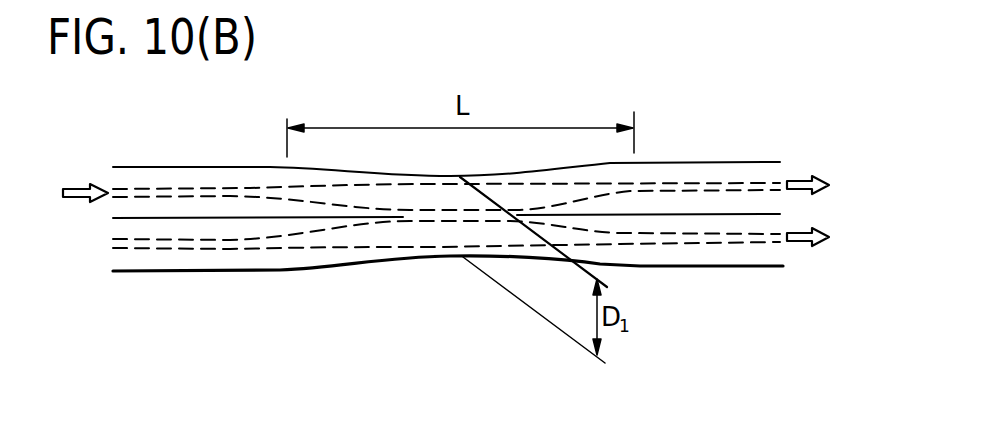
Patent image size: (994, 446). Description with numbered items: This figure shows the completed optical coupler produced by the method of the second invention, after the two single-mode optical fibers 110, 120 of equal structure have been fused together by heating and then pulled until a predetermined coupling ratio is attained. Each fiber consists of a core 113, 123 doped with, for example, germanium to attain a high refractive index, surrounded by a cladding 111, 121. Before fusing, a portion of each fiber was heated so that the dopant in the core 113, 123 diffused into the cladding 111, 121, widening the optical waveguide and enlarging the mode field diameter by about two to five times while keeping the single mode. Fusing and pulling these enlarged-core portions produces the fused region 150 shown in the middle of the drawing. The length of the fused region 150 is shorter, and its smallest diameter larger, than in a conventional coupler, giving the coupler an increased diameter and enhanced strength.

The optical fiber 110 is at (680, 161).
The cladding 111 is at (209, 172).
The core 113 is at (142, 292).
The optical fiber 120 is at (702, 267).
The cladding 121 is at (217, 260).
The core 123 is at (446, 277).
The fused region 150 is at (430, 228).